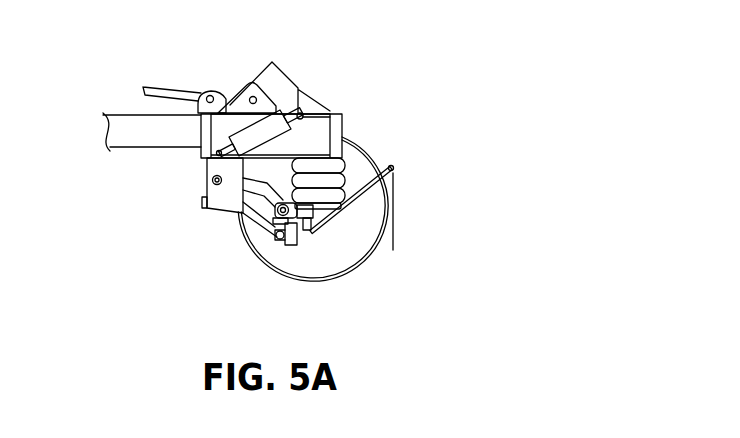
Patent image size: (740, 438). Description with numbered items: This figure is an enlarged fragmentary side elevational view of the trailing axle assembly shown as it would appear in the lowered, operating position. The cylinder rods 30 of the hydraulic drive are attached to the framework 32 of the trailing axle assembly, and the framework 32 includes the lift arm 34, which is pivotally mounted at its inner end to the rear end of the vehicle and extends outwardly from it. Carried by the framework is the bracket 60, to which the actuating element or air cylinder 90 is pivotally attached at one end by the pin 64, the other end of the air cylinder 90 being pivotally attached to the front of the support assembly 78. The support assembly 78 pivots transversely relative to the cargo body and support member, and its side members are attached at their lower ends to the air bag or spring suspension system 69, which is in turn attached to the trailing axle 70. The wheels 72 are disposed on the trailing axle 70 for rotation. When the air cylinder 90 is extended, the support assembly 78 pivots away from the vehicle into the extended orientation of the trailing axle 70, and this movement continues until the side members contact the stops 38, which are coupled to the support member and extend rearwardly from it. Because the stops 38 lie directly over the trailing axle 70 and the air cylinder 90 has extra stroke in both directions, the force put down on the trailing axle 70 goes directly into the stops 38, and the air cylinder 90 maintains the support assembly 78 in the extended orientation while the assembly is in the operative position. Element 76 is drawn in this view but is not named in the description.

The cylinder rods 30 is at (162, 90).
The framework 32 is at (119, 107).
The lift arm 34 is at (121, 145).
The stops 38 is at (300, 92).
The bracket 60 is at (287, 93).
The pin 64 is at (334, 113).
The air bag or spring suspension system 69 is at (355, 172).
The trailing axle 70 is at (309, 221).
The wheels 72 is at (340, 261).
The mounting bracket 76 is at (207, 166).
The support assembly 78 is at (342, 128).
The air cylinder 90 is at (251, 134).